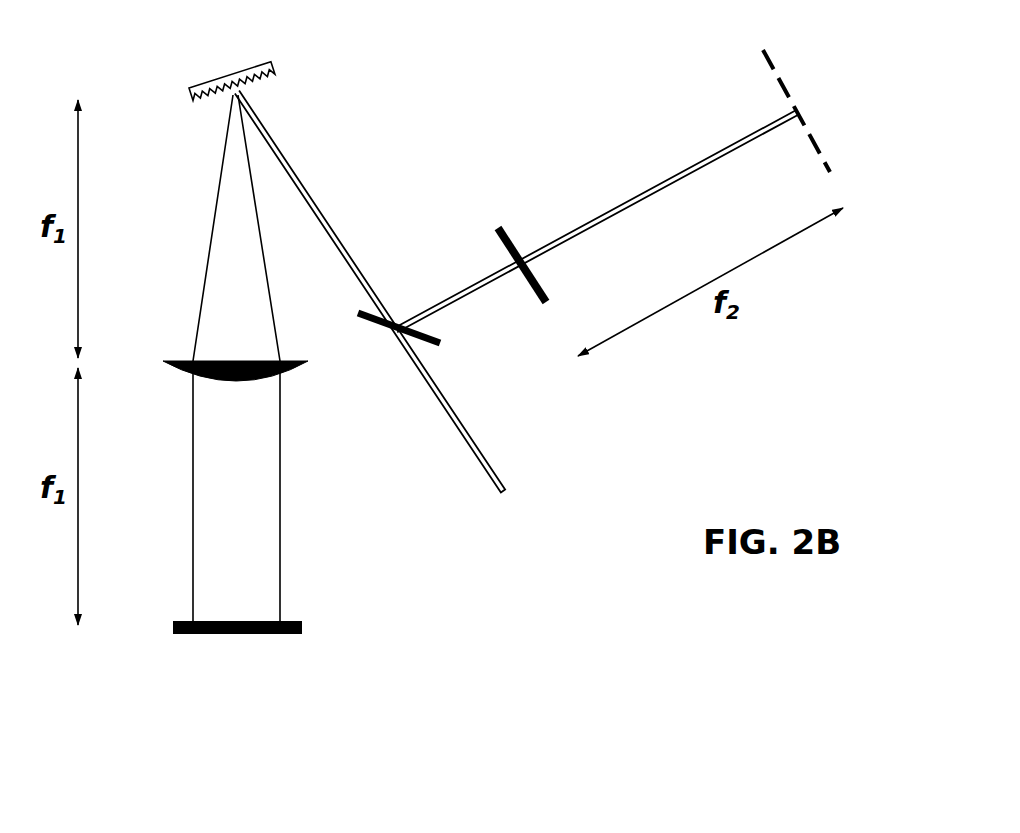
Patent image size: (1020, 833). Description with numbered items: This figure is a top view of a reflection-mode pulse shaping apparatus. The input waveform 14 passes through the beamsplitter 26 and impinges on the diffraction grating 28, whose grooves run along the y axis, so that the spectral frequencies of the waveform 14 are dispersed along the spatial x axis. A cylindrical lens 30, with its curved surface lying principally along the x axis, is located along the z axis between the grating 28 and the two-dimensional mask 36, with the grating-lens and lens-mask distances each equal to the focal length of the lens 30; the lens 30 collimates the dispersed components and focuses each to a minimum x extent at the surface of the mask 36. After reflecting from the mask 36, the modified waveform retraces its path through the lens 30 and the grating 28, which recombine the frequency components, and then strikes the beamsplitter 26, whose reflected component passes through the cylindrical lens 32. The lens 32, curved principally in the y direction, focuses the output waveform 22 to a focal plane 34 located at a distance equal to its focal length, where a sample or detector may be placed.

The waveform 14 is at (387, 313).
The output waveform 22 is at (597, 221).
The beamsplitter 26 is at (399, 342).
The diffraction grating 28 is at (232, 66).
The cylindrical lens 30 is at (248, 387).
The cylindrical lens 32 is at (511, 247).
The focal plane 34 is at (785, 95).
The two-dimensional mask 36 is at (237, 649).